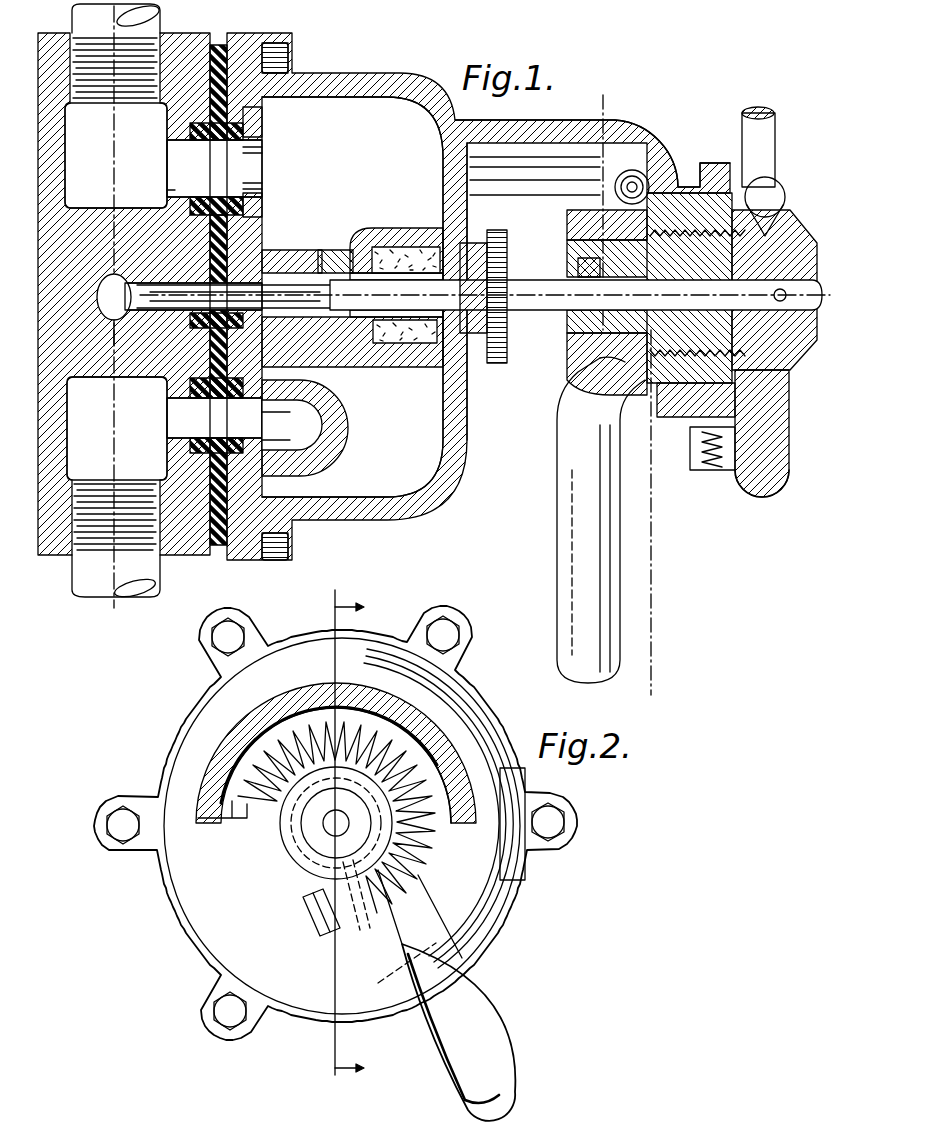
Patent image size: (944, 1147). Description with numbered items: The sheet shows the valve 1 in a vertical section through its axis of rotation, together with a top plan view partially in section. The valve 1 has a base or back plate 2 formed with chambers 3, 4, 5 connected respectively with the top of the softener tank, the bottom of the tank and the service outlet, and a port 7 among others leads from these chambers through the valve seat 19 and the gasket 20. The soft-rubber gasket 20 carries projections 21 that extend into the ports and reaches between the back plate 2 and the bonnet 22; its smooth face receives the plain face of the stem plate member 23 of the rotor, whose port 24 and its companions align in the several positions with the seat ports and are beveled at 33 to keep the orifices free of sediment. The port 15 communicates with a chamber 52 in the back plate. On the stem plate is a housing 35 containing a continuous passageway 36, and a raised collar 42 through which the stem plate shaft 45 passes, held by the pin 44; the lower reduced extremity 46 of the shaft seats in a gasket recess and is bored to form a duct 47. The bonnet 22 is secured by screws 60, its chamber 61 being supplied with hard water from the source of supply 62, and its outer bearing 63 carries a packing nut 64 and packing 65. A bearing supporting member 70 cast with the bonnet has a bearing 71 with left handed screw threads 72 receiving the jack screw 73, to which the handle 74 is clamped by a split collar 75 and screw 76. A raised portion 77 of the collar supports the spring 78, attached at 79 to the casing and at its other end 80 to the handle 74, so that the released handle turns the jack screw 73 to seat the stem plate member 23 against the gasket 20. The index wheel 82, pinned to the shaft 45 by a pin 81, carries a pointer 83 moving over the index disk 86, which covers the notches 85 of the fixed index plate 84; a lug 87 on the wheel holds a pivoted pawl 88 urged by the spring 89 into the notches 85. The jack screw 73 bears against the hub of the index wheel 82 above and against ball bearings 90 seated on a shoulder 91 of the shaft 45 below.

In FIG. 1, the valve 1 is at (437, 81).
In FIG. 2, the valve 1 is at (359, 832).
In FIG. 1, the base or back plate 2 is at (60, 162).
In FIG. 1, the chamber 3 is at (116, 155).
In FIG. 1, the chamber 4 is at (117, 463).
In FIG. 1, the chamber 5 is at (103, 22).
In FIG. 1, the port 7 is at (172, 182).
In FIG. 1, the port 15 is at (116, 320).
In FIG. 1, the valve seat 19 is at (180, 112).
In FIG. 1, the gasket 20 is at (218, 46).
In FIG. 1, the projections 21 is at (196, 180).
In FIG. 1, the bonnet 22 is at (325, 82).
In FIG. 2, the bonnet 22 is at (456, 690).
In FIG. 1, the stem plate member 23 is at (264, 122).
In FIG. 1, the port 24 is at (262, 182).
In FIG. 1, the bevel 33 is at (265, 150).
In FIG. 1, the housing 35 is at (306, 478).
In FIG. 1, the continuous passageway 36 is at (292, 425).
In FIG. 1, the raised collar 42 is at (312, 250).
In FIG. 1, the pin 44 is at (412, 297).
In FIG. 1, the stem plate shaft 45 is at (792, 311).
In FIG. 1, the lower reduced extremity 46 is at (266, 293).
In FIG. 1, the duct 47 is at (280, 260).
In FIG. 1, the chamber 52 is at (110, 318).
In FIG. 1, the screws 60 is at (279, 48).
In FIG. 2, the screws 60 is at (456, 632).
In FIG. 1, the bonnet chamber 61 is at (380, 112).
In FIG. 1, the source of supply 62 is at (352, 248).
In FIG. 2, the source of supply 62 is at (526, 861).
In FIG. 1, the bearing 63 is at (400, 246).
In FIG. 1, the packing nut 64 is at (507, 349).
In FIG. 1, the packing 65 is at (381, 246).
In FIG. 1, the bearing supporting member 70 is at (600, 118).
In FIG. 2, the bearing supporting member 70 is at (352, 692).
In FIG. 1, the bearing 71 is at (782, 199).
In FIG. 1, the left handed screw threads 72 is at (792, 246).
In FIG. 1, the jack screw 73 is at (760, 263).
In FIG. 2, the jack screw 73 is at (301, 862).
In FIG. 1, the handle 74 is at (612, 553).
In FIG. 2, the handle 74 is at (506, 1050).
In FIG. 1, the split collar 75 is at (576, 368).
In FIG. 2, the split collar 75 is at (284, 841).
In FIG. 2, the screw 76 is at (316, 921).
In FIG. 1, the raised portion 77 is at (591, 216).
In FIG. 2, the raised portion 77 is at (285, 809).
In FIG. 1, the spring 78 is at (645, 170).
In FIG. 2, the spring 78 is at (291, 766).
In FIG. 2, the spring attachment point 79 is at (225, 817).
In FIG. 2, the spring end 80 is at (421, 871).
In FIG. 1, the pin 81 is at (787, 295).
In FIG. 1, the index wheel 82 is at (771, 186).
In FIG. 1, the pointer 83 is at (776, 216).
In FIG. 1, the index plate 84 is at (690, 186).
In FIG. 2, the index plate 84 is at (441, 848).
In FIG. 1, the notches 85 is at (710, 164).
In FIG. 2, the notches 85 is at (470, 713).
In FIG. 1, the index disk 86 is at (736, 400).
In FIG. 2, the index disk 86 is at (405, 896).
In FIG. 1, the lug 87 is at (706, 471).
In FIG. 1, the pawl 88 is at (726, 446).
In FIG. 1, the spring 89 is at (761, 496).
In FIG. 1, the ball bearings 90 is at (626, 396).
In FIG. 1, the shoulder 91 is at (577, 277).